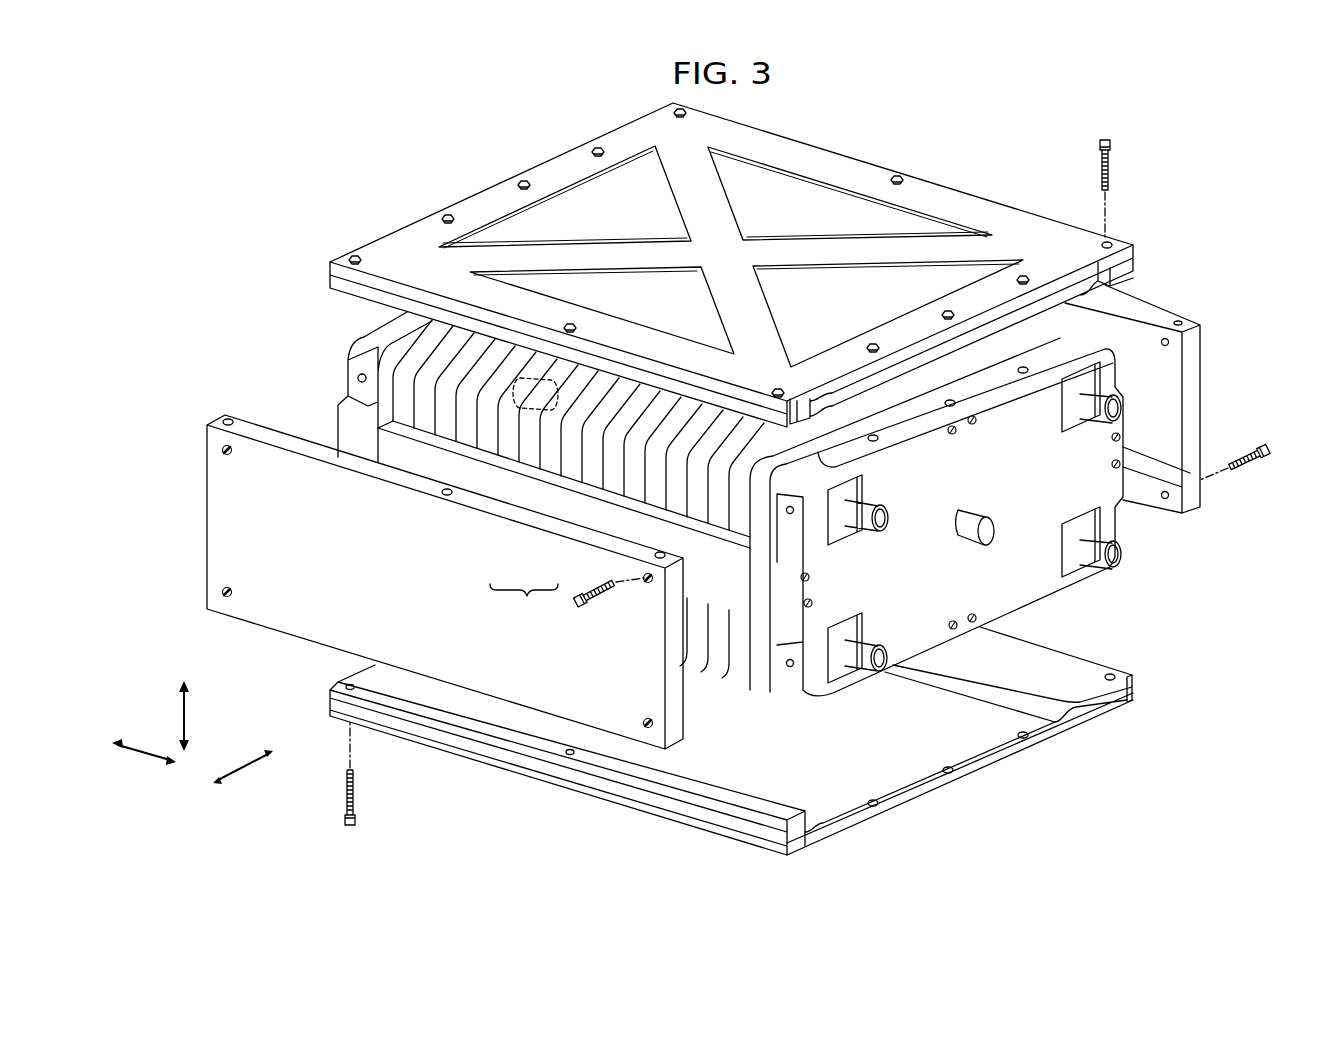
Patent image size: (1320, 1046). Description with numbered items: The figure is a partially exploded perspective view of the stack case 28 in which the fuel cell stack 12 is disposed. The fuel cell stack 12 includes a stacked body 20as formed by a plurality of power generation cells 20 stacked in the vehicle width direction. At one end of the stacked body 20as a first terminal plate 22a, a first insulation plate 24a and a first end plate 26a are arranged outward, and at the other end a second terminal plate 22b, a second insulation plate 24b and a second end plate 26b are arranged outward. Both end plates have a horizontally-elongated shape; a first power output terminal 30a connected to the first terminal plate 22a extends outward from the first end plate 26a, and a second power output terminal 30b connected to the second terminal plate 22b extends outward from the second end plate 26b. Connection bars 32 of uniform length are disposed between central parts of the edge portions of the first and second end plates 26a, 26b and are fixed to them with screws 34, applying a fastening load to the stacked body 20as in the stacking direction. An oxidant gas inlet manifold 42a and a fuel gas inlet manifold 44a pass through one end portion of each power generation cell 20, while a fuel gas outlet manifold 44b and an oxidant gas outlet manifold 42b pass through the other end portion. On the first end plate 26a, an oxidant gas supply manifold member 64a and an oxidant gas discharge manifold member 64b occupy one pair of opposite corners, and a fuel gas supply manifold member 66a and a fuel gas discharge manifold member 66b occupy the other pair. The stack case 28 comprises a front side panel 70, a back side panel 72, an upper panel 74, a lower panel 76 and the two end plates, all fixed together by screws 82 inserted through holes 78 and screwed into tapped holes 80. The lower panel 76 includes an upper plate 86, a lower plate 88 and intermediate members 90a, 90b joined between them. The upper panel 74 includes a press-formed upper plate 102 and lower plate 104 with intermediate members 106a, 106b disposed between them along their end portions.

The fuel cell stack 12 is at (208, 183).
The power generation cell 20 is at (599, 505).
The stacked body 20as is at (524, 602).
The first terminal plate 22a is at (758, 640).
The second terminal plate 22b is at (426, 425).
The first insulation plate 24a is at (781, 482).
The second insulation plate 24b is at (405, 417).
The first end plate 26a is at (1043, 536).
The second end plate 26b is at (357, 342).
The stack case 28 is at (770, 265).
The first power output terminal 30a is at (990, 541).
The second power output terminal 30b is at (513, 412).
The connection bar 32 is at (383, 446).
The screw 34 is at (976, 424).
The oxidant gas inlet manifold 42a is at (1120, 408).
The oxidant gas outlet manifold 42b is at (881, 662).
The fuel gas inlet manifold 44a is at (1120, 555).
The fuel gas outlet manifold 44b is at (862, 490).
The oxidant gas supply manifold member 64a is at (1186, 397).
The oxidant gas discharge manifold member 64b is at (880, 668).
The fuel gas supply manifold member 66a is at (1150, 546).
The fuel gas discharge manifold member 66b is at (906, 506).
The front side panel 70 is at (213, 416).
The back side panel 72 is at (1203, 331).
The upper panel 74 is at (770, 265).
The lower panel 76 is at (763, 731).
The hole 78 is at (1107, 242).
The tapped hole 80 is at (1023, 374).
The screw 82 is at (1113, 158).
The upper plate 86 is at (1057, 660).
The lower plate 88 is at (1085, 722).
The intermediate member 90a is at (660, 800).
The intermediate member 90b is at (1133, 690).
The upper plate 102 is at (950, 195).
The lower plate 104 is at (1126, 287).
The intermediate member 106a is at (798, 400).
The intermediate member 106b is at (1133, 271).